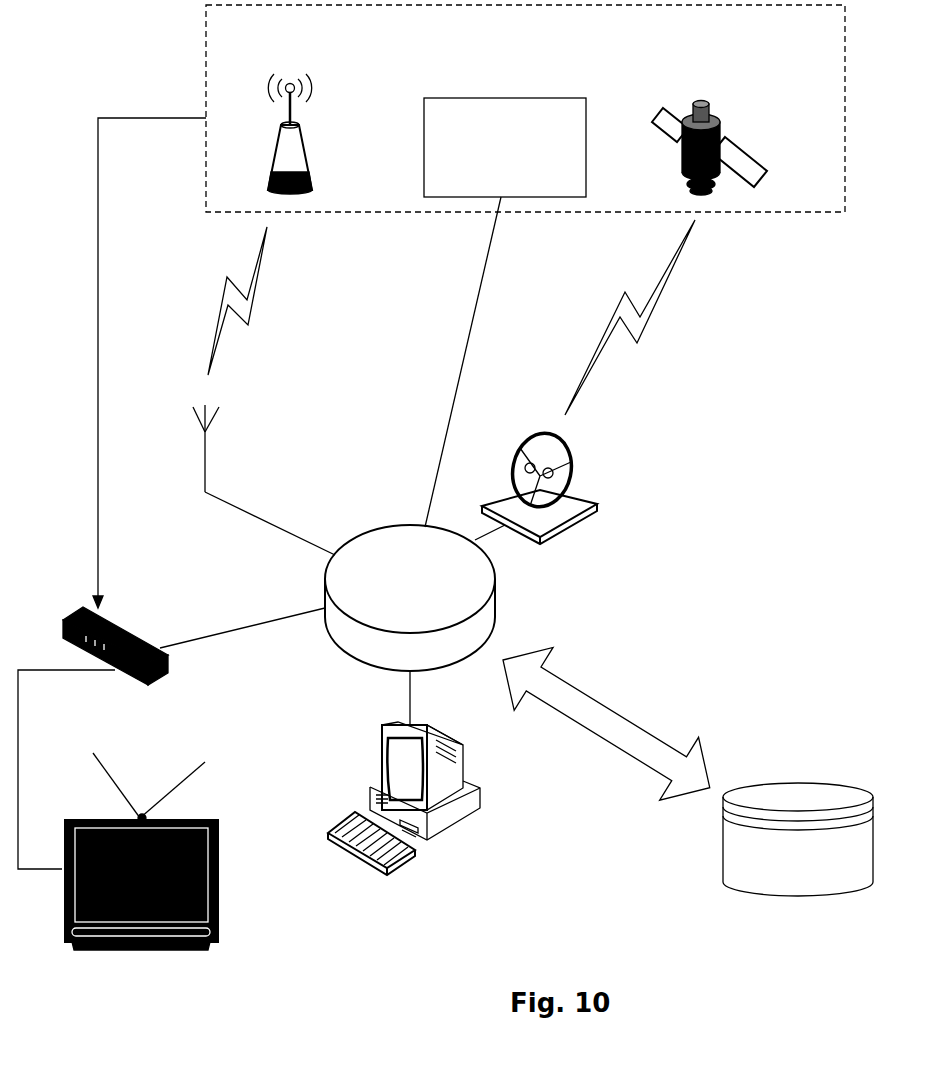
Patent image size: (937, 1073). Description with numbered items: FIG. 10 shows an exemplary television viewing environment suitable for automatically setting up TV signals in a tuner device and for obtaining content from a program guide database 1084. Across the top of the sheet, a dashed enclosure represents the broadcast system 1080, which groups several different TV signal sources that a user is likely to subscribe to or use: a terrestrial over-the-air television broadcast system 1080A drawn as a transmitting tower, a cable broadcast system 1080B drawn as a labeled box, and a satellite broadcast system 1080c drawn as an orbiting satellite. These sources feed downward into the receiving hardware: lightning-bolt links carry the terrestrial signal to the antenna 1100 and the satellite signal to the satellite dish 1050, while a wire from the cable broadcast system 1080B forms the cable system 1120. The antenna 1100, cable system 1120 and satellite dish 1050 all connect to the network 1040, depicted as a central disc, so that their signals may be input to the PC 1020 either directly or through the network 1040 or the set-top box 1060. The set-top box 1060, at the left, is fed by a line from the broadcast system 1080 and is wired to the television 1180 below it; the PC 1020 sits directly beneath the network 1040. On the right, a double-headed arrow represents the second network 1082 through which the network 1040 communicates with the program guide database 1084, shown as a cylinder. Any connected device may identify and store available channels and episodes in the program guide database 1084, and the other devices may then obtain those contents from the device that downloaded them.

The broadcast system 1080 is at (525, 108).
The terrestrial/OTA television broadcast system 1080A is at (323, 97).
The cable broadcast system 1080B is at (505, 128).
The satellite broadcast system 1080c is at (673, 115).
The antenna 1100 is at (210, 472).
The cable system 1120 is at (445, 438).
The satellite dish 1050 is at (598, 510).
The network 1040 is at (483, 622).
The set-top box 1060 is at (137, 632).
The television 1180 is at (222, 900).
The PC 1020 is at (504, 834).
The second network 1082 is at (617, 722).
The program guide database 1084 is at (772, 882).